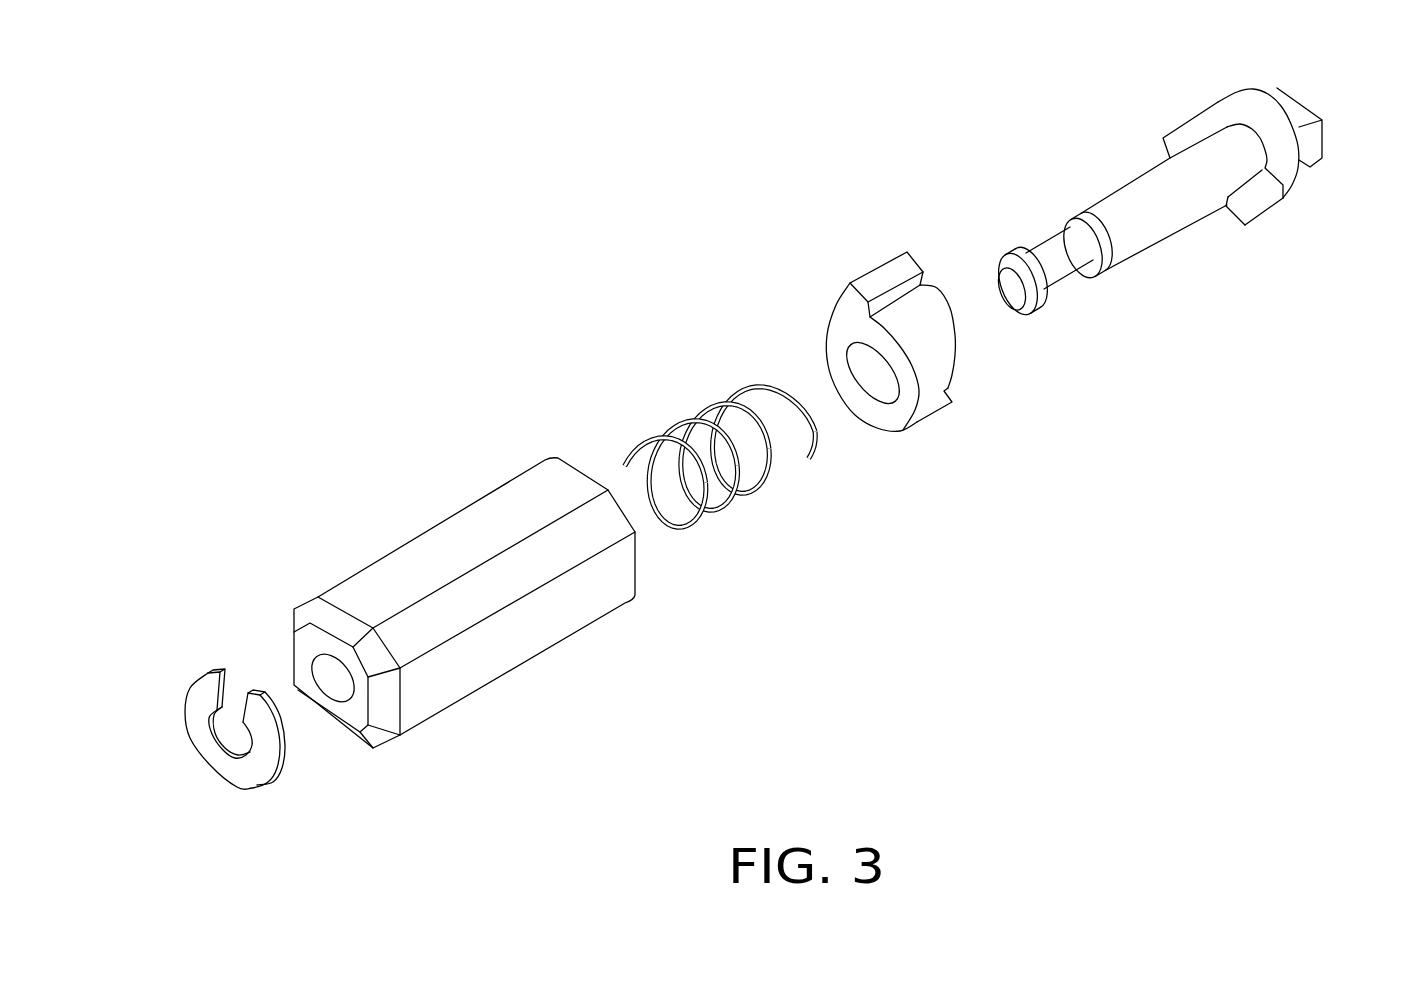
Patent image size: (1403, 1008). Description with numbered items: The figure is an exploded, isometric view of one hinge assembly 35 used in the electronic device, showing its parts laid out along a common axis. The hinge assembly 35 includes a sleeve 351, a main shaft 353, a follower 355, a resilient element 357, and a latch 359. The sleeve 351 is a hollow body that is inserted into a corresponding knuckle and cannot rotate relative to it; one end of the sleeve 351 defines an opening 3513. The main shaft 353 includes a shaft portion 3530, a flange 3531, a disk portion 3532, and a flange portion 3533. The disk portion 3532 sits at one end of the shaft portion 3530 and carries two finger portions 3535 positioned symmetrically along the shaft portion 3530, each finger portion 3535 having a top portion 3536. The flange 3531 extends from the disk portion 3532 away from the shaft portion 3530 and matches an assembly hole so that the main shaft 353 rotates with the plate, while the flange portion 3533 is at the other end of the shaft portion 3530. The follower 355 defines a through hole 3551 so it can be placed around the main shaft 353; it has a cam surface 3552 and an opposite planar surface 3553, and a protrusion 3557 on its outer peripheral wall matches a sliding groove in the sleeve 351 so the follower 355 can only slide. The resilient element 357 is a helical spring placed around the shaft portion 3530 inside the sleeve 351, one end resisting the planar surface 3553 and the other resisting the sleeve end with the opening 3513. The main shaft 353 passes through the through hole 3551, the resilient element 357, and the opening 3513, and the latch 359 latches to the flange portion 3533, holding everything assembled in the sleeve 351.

The hinge assembly 35 is at (955, 70).
The sleeve 351 is at (450, 543).
The opening 3513 is at (327, 673).
The main shaft 353 is at (1118, 162).
The shaft portion 3530 is at (1158, 215).
The flange 3531 is at (1295, 113).
The disk portion 3532 is at (1242, 98).
The flange portion 3533 is at (1050, 300).
The finger portion 3535 is at (1270, 207).
The top portion 3536 is at (1238, 208).
The follower 355 is at (877, 262).
The through hole 3551 is at (873, 385).
The cam surface 3552 is at (943, 295).
The planar surface 3553 is at (907, 416).
The protrusion 3557 is at (895, 270).
The resilient element 357 is at (698, 423).
The latch 359 is at (208, 685).